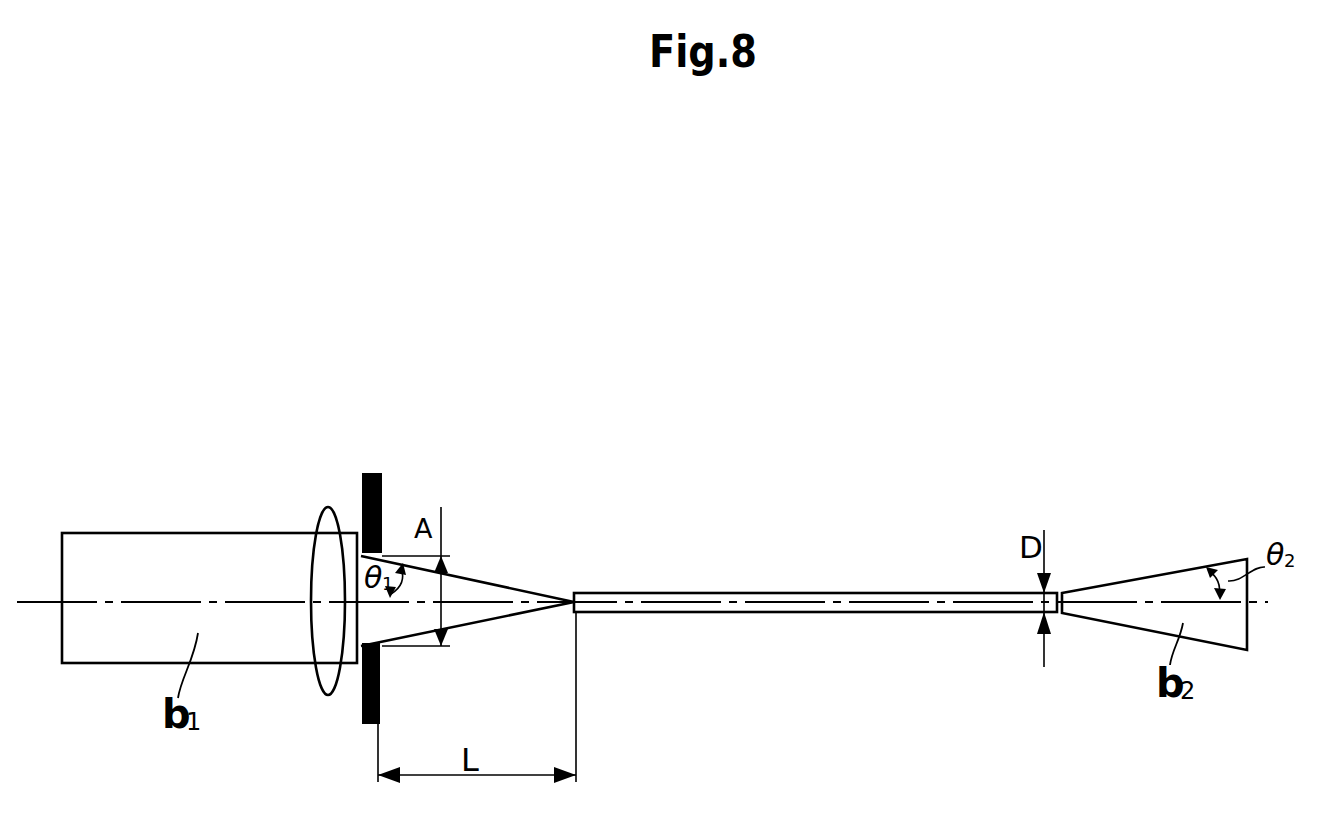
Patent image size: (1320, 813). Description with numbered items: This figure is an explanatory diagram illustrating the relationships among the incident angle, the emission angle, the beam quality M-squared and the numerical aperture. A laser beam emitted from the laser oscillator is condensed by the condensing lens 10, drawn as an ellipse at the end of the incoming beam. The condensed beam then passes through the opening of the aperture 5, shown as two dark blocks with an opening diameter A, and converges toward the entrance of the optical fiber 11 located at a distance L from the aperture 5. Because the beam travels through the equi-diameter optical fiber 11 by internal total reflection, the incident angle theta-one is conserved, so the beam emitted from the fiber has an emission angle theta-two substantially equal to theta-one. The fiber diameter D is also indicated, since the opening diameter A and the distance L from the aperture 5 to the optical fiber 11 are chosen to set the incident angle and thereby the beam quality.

The aperture 5 is at (373, 473).
The condensing lens 10 is at (328, 504).
The optical fiber 11 is at (805, 592).